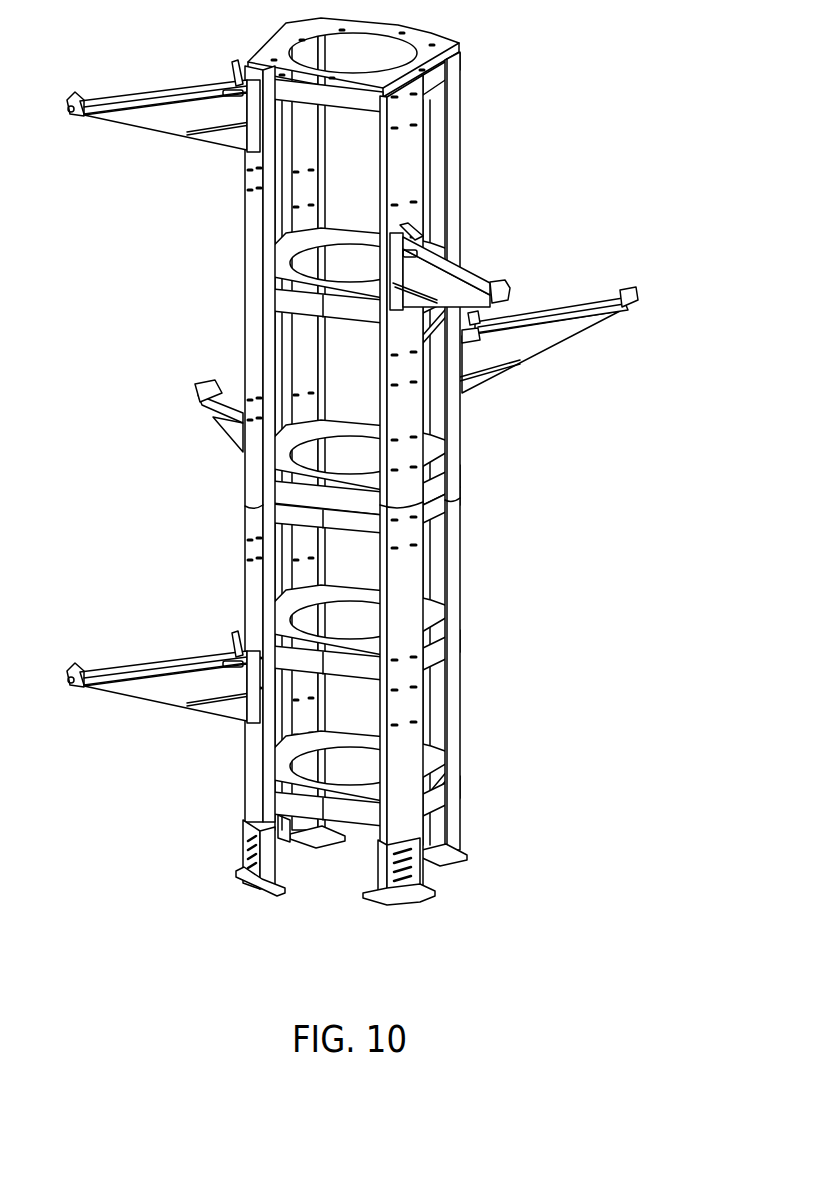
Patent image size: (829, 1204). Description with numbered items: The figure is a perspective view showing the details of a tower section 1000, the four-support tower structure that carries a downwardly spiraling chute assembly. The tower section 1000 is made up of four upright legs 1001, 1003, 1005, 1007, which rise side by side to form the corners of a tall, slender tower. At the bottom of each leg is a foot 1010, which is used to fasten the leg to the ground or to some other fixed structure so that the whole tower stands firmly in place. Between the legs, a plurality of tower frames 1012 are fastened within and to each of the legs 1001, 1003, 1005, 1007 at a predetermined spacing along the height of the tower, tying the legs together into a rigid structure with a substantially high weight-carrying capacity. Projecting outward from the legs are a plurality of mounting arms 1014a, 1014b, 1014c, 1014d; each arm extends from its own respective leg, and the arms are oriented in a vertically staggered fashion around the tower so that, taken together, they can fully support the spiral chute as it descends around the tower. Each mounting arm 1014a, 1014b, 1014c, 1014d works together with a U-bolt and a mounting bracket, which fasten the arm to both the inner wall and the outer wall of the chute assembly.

The tower section 1000 is at (344, 466).
The leg 1001 is at (250, 800).
The leg 1003 is at (297, 705).
The leg 1005 is at (452, 702).
The leg 1007 is at (402, 803).
The foot 1010 is at (382, 862).
The tower frame 1012 is at (443, 33).
The mounting arm 1014a is at (157, 117).
The mounting arm 1014b is at (450, 288).
The mounting arm 1014c is at (545, 340).
The mounting arm 1014d is at (230, 425).